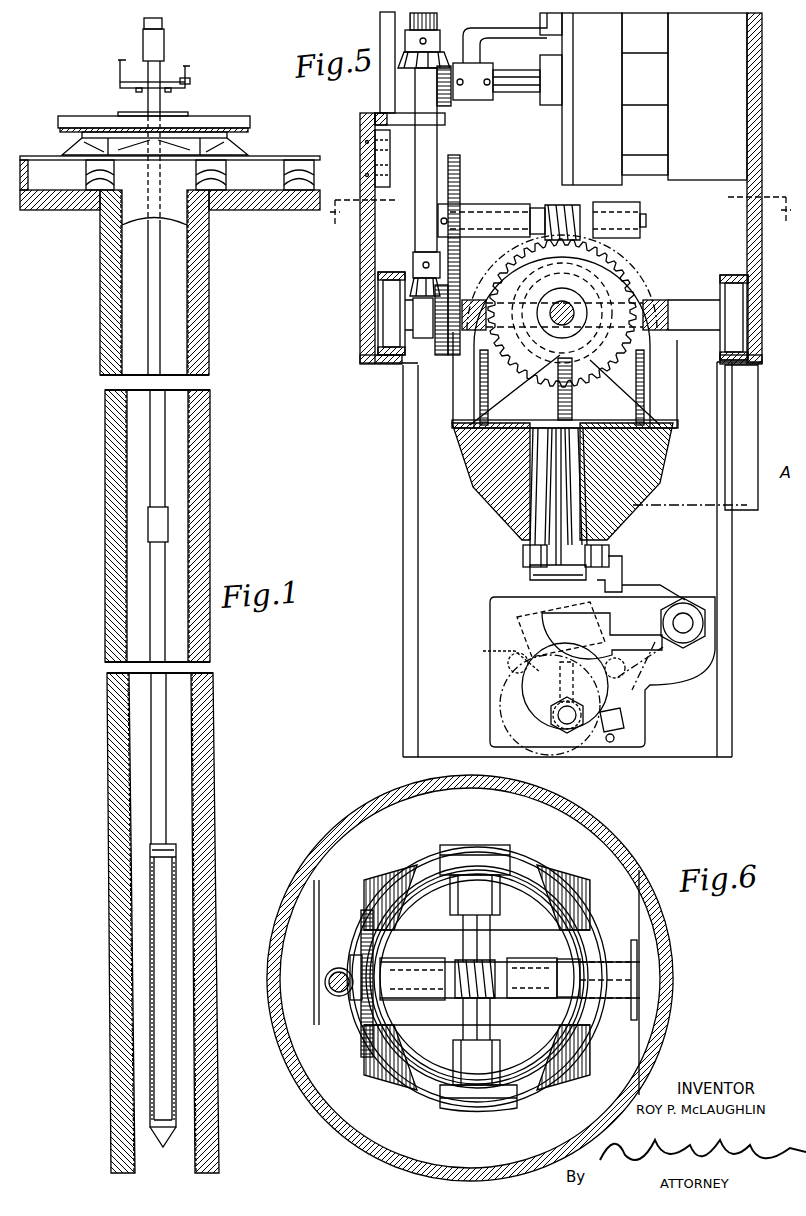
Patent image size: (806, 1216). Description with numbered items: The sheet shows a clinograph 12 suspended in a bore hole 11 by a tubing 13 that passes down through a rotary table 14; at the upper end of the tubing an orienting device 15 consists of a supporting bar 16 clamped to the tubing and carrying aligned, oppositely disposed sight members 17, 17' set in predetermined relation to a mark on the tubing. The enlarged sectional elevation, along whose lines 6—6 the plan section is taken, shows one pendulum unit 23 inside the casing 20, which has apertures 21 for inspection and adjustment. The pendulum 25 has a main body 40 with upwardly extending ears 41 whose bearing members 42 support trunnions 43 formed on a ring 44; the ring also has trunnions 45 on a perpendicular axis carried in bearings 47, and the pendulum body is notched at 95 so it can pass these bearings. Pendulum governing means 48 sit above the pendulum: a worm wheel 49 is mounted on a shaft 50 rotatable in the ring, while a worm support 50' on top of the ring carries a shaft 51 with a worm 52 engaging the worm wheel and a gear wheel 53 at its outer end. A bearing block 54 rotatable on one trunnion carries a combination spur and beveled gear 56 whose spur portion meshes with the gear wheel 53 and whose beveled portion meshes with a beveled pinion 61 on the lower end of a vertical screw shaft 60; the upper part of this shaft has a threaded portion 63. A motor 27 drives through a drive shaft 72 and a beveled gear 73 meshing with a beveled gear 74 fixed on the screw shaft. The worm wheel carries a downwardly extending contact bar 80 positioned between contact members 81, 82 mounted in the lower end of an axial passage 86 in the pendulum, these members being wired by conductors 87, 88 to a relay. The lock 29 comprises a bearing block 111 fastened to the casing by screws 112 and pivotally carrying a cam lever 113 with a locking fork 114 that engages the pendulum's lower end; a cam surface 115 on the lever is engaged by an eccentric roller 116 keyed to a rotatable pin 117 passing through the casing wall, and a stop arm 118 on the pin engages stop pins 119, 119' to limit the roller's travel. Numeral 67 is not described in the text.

In FIG. 5, the section line 6— 6 is at (560, 223).
In FIG. 1, the bore hole 11 is at (177, 578).
In FIG. 1, the clinograph 12 is at (156, 995).
In FIG. 1, the tubing 13 is at (149, 100).
In FIG. 1, the rotary table 14 is at (234, 118).
In FIG. 1, the orienting device 15 is at (190, 82).
In FIG. 1, the supporting bar 16 is at (166, 84).
In FIG. 1, the sight member 17 is at (202, 65).
In FIG. 1, the sight member 17' is at (112, 60).
In FIG. 5, the casing 20 is at (362, 125).
In FIG. 6, the casing 20 is at (676, 970).
In FIG. 5, the apertures 21 is at (402, 712).
In FIG. 5, the pendulum unit 23 is at (392, 195).
In FIG. 5, the pendulum 25 is at (452, 392).
In FIG. 6, the pendulum 25 is at (383, 1103).
In FIG. 5, the motor 27 is at (706, 88).
In FIG. 5, the pendulum locking means 29 is at (620, 688).
In FIG. 5, the main body 40 is at (660, 486).
In FIG. 5, the ears 41 is at (632, 356).
In FIG. 6, the ears 41 is at (560, 882).
In FIG. 6, the bearing members 42 is at (440, 862).
In FIG. 6, the trunnions 43 is at (488, 880).
In FIG. 5, the ring 44 is at (625, 328).
In FIG. 6, the ring 44 is at (420, 900).
In FIG. 5, the trunnions 45 is at (408, 322).
In FIG. 6, the trunnions 45 is at (315, 1008).
In FIG. 5, the bearings 47 is at (386, 292).
In FIG. 6, the bearings 47 is at (348, 962).
In FIG. 5, the pendulum governing means 48 is at (640, 272).
In FIG. 5, the worm wheel 49 is at (604, 350).
In FIG. 5, the shaft 50 is at (564, 313).
In FIG. 6, the shaft 50 is at (510, 990).
In FIG. 5, the worm support 50' is at (639, 214).
In FIG. 6, the worm support 50' is at (532, 990).
In FIG. 5, the shaft 51 is at (646, 220).
In FIG. 6, the shaft 51 is at (562, 958).
In FIG. 5, the worm 52 is at (554, 204).
In FIG. 6, the worm 52 is at (462, 968).
In FIG. 5, the gear wheel 53 is at (461, 160).
In FIG. 6, the gear wheel 53 is at (364, 922).
In FIG. 5, the bearing block 54 is at (430, 340).
In FIG. 5, the combination spur and beveled gear 56 is at (452, 348).
In FIG. 6, the combination spur and beveled gear 56 is at (366, 1031).
In FIG. 5, the vertical screw shaft 60 is at (416, 226).
In FIG. 6, the vertical screw shaft 60 is at (353, 1004).
In FIG. 5, the beveled pinion 61 is at (414, 276).
In FIG. 6, the beveled pinion 61 is at (356, 962).
In FIG. 5, the threaded portion 63 is at (412, 22).
In FIG. 5, the rod 67 is at (382, 94).
In FIG. 5, the drive shaft 72 is at (518, 92).
In FIG. 5, the beveled gear 73 is at (448, 104).
In FIG. 5, the beveled gear 74 is at (440, 56).
In FIG. 5, the contact bar 80 is at (558, 396).
In FIG. 5, the contact member 81 is at (523, 555).
In FIG. 5, the contact member 82 is at (609, 552).
In FIG. 5, the axial passage 86 is at (553, 458).
In FIG. 5, the conductor 87 is at (528, 528).
In FIG. 5, the conductor 88 is at (618, 512).
In FIG. 5, the notch 95 is at (648, 468).
In FIG. 5, the bearing block 111 is at (496, 696).
In FIG. 5, the screws 112 is at (508, 666).
In FIG. 5, the cam lever 113 is at (660, 590).
In FIG. 5, the locking fork 114 is at (622, 574).
In FIG. 5, the cam surface 115 is at (556, 624).
In FIG. 5, the eccentric roller 116 is at (536, 705).
In FIG. 5, the rotatable pin 117 is at (570, 726).
In FIG. 5, the stop arm 118 is at (624, 724).
In FIG. 5, the stop pin 119 is at (498, 658).
In FIG. 5, the stop pin 119' is at (649, 743).